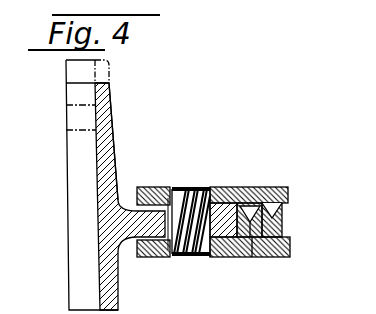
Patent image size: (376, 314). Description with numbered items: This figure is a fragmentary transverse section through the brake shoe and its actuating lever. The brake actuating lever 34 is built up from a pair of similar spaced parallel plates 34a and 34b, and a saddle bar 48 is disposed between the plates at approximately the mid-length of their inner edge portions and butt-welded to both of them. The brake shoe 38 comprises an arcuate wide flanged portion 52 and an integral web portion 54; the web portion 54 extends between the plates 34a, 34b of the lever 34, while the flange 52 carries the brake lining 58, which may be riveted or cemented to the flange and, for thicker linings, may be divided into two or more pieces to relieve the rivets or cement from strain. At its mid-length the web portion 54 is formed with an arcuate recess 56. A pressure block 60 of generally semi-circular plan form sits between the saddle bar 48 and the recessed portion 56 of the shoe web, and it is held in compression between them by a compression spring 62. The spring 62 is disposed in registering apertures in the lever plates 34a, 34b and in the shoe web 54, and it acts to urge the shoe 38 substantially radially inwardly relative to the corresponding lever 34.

The brake actuating lever 34 is at (154, 186).
The lever plate 34a is at (289, 195).
The lever plate 34b is at (290, 247).
The brake shoe 38 is at (113, 107).
The saddle bar 48 is at (283, 221).
The flanged portion 52 is at (105, 247).
The web portion 54 is at (137, 211).
The arcuate recess 56 is at (246, 204).
The brake lining 58 is at (73, 203).
The pressure block 60 is at (252, 258).
The compression spring 62 is at (188, 192).